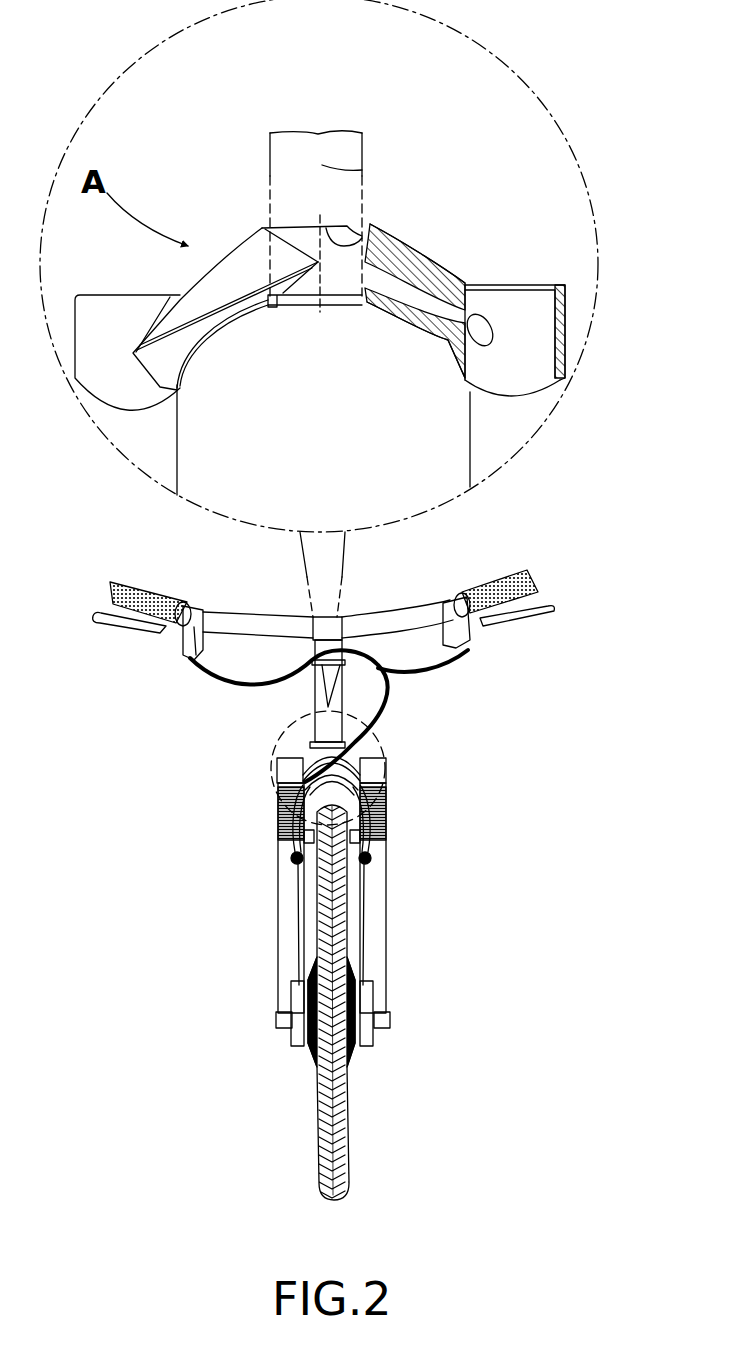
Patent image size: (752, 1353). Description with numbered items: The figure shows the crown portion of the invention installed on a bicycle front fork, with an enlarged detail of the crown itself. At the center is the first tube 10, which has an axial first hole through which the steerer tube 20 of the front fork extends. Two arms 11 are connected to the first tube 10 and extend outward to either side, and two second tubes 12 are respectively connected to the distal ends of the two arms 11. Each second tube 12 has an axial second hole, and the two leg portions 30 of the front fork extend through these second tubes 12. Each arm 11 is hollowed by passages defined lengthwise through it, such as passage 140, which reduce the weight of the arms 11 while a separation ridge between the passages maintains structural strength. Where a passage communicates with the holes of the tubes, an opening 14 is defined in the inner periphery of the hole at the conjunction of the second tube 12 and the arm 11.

The first tube 10 is at (267, 229).
The arms 11 is at (234, 334).
The second tubes 12 is at (565, 330).
The opening 14 is at (483, 330).
The passage 140 is at (407, 295).
The steerer tube 20 is at (366, 172).
The leg portions 30 is at (510, 437).